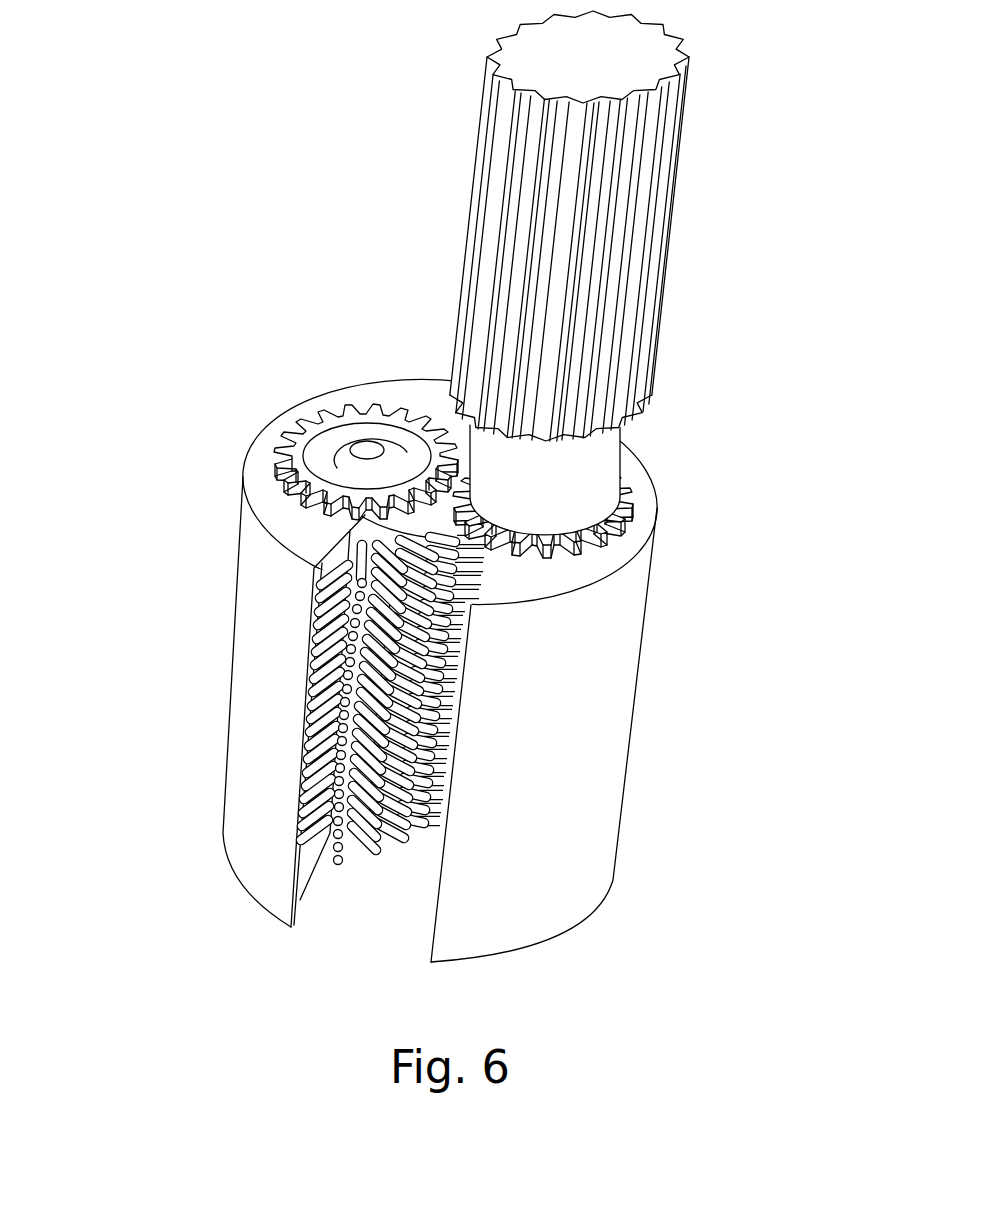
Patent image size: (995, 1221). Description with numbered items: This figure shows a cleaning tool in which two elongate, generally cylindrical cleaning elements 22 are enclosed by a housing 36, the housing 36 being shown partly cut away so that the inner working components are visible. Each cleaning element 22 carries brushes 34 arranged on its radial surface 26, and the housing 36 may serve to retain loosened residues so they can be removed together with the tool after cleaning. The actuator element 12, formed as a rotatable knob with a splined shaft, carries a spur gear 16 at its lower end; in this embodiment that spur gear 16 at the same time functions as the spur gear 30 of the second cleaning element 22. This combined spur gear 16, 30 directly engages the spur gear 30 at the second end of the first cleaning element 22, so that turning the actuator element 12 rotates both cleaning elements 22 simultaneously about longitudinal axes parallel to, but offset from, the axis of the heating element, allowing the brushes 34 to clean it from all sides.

The actuator element 12 is at (637, 153).
The spur gear of the actuator element 16 is at (604, 530).
The spur gear 30 is at (348, 421).
The cleaning element 22 is at (461, 688).
The radial surface 26 is at (461, 688).
The brushes 34 is at (328, 577).
The housing 36 is at (595, 848).